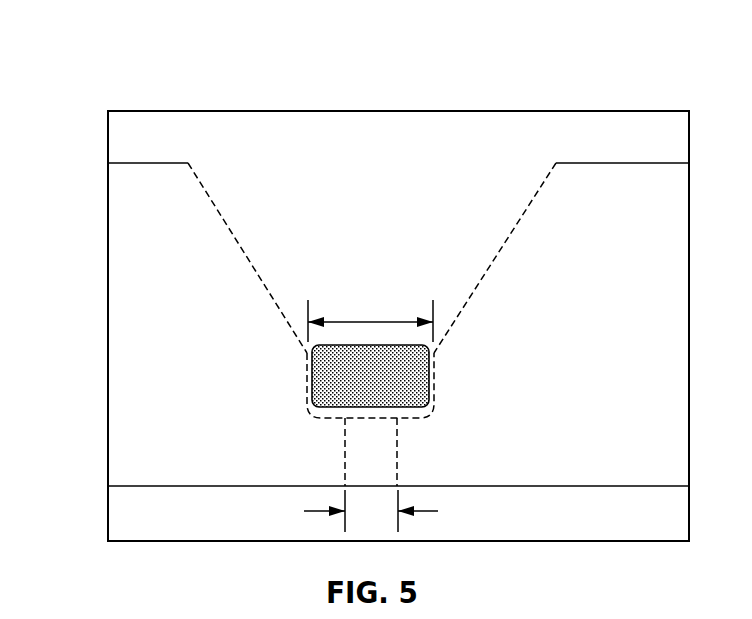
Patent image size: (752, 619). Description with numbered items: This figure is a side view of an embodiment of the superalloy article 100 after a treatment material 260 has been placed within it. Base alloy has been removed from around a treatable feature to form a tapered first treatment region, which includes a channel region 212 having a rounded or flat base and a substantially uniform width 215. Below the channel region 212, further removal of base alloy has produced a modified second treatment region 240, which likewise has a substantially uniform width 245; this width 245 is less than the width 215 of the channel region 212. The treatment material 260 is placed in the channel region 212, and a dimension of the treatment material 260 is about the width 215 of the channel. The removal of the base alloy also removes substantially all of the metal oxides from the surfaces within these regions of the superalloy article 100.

The superalloy article 100 is at (162, 72).
The channel region 212 is at (307, 382).
The width 215 is at (370, 320).
The modified second treatment region 240 is at (363, 457).
The width 245 is at (373, 510).
The treatment material 260 is at (330, 368).